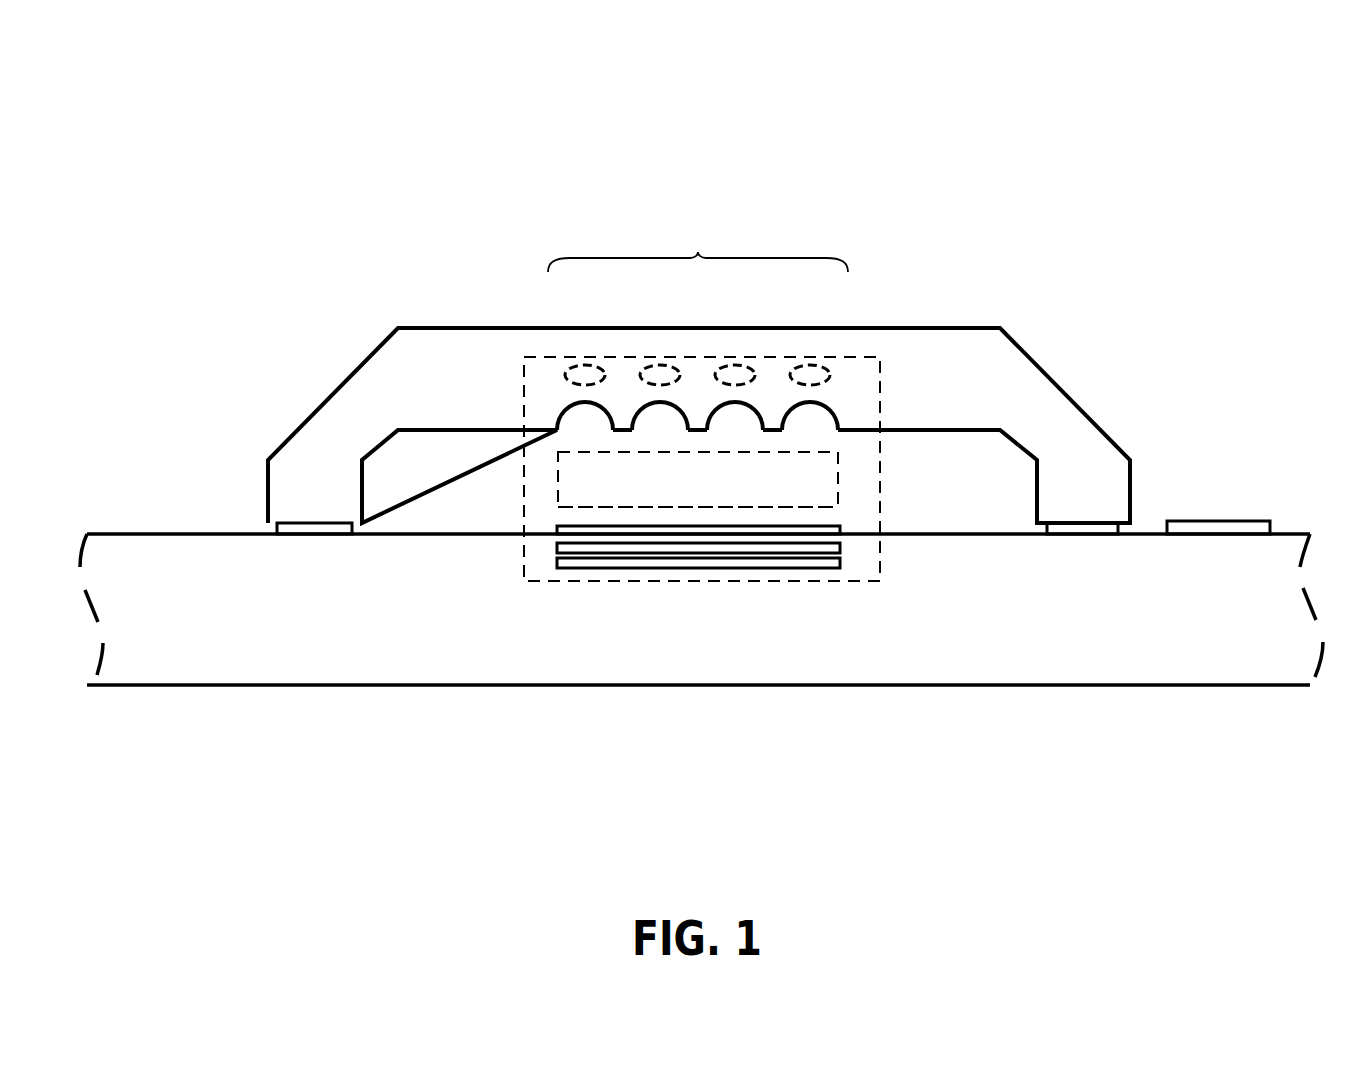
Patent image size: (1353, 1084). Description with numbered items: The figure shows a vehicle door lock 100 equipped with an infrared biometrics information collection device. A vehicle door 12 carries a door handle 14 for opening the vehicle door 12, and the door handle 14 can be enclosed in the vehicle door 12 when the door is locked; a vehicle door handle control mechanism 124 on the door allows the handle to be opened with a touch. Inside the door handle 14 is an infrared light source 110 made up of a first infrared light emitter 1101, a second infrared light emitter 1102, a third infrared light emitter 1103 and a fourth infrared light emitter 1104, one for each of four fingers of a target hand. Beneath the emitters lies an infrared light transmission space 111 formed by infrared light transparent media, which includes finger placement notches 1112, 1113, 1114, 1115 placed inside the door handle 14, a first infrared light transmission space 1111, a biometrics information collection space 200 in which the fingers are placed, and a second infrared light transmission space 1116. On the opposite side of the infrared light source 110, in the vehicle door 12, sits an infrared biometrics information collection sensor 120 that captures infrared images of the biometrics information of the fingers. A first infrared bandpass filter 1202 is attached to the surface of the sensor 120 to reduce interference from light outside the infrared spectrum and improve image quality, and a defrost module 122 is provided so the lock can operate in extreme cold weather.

The vehicle door lock 100 is at (1323, 85).
The vehicle door 12 is at (323, 610).
The door handle 14 is at (330, 422).
The infrared light source 110 is at (698, 246).
The infrared light transmission space 111 is at (706, 329).
The first infrared light emitter 1101 is at (578, 364).
The second infrared light emitter 1102 is at (652, 364).
The third infrared light emitter 1103 is at (728, 364).
The fourth infrared light emitter 1104 is at (808, 364).
The first infrared light transmission space 1111 is at (833, 438).
The finger placement notch 1112 is at (562, 410).
The finger placement notch 1113 is at (637, 410).
The finger placement notch 1114 is at (760, 410).
The finger placement notch 1115 is at (832, 410).
The second infrared light transmission space 1116 is at (833, 510).
The infrared biometrics information collection sensor 120 is at (698, 486).
The defrost module 122 is at (565, 528).
The vehicle door handle control mechanism 124 is at (1215, 528).
The biometrics information collection space 200 is at (833, 480).
The first infrared bandpass filter 1202 is at (567, 548).